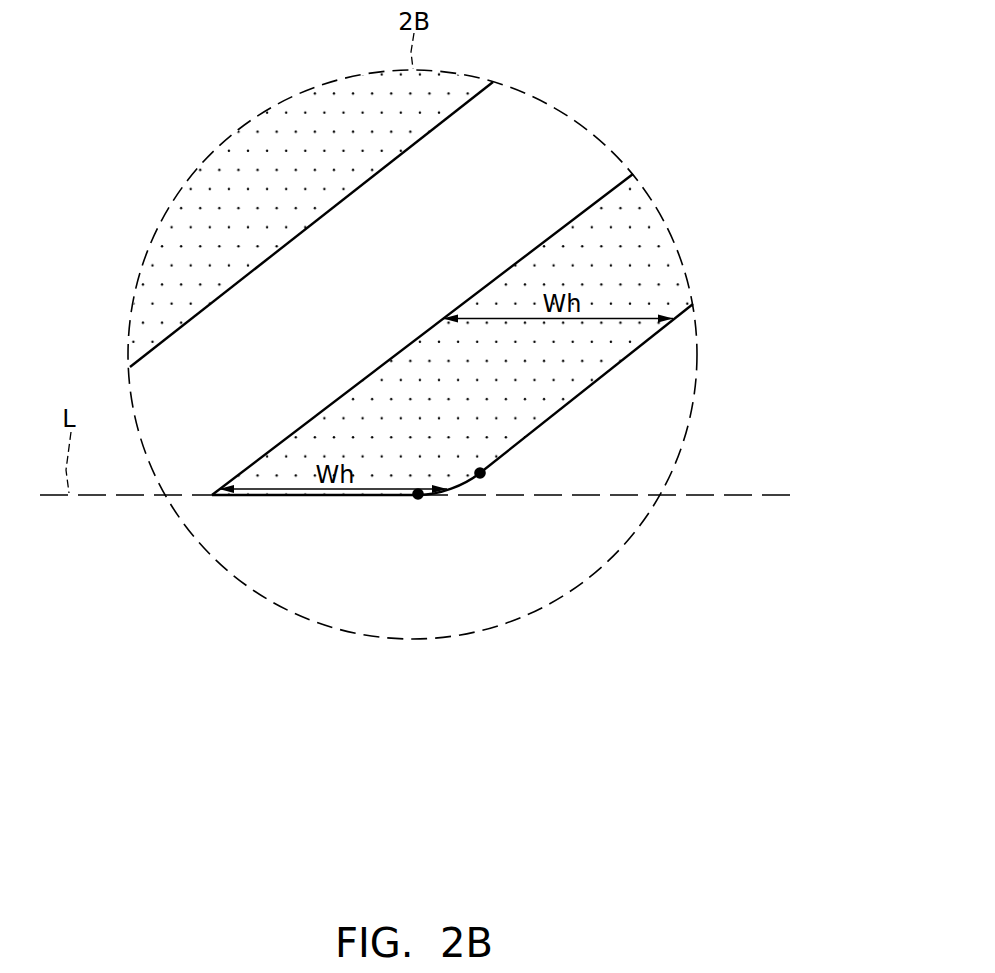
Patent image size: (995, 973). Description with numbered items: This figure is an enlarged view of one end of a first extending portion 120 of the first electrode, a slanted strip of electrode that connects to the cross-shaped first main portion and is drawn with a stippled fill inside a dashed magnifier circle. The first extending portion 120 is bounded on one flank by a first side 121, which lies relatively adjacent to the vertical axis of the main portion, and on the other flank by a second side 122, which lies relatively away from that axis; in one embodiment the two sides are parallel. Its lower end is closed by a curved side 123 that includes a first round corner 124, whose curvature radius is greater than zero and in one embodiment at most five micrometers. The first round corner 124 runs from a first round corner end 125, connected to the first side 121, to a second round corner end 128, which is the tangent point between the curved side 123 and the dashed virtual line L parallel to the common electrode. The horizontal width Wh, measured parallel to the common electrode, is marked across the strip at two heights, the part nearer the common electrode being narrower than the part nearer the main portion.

The first extending portion 120 is at (385, 410).
The first side 121 is at (590, 388).
The second side 122 is at (420, 328).
The curved side 123 is at (316, 499).
The first round corner 124 is at (455, 497).
The first round corner end 125 is at (487, 472).
The second round corner end 128 is at (418, 501).